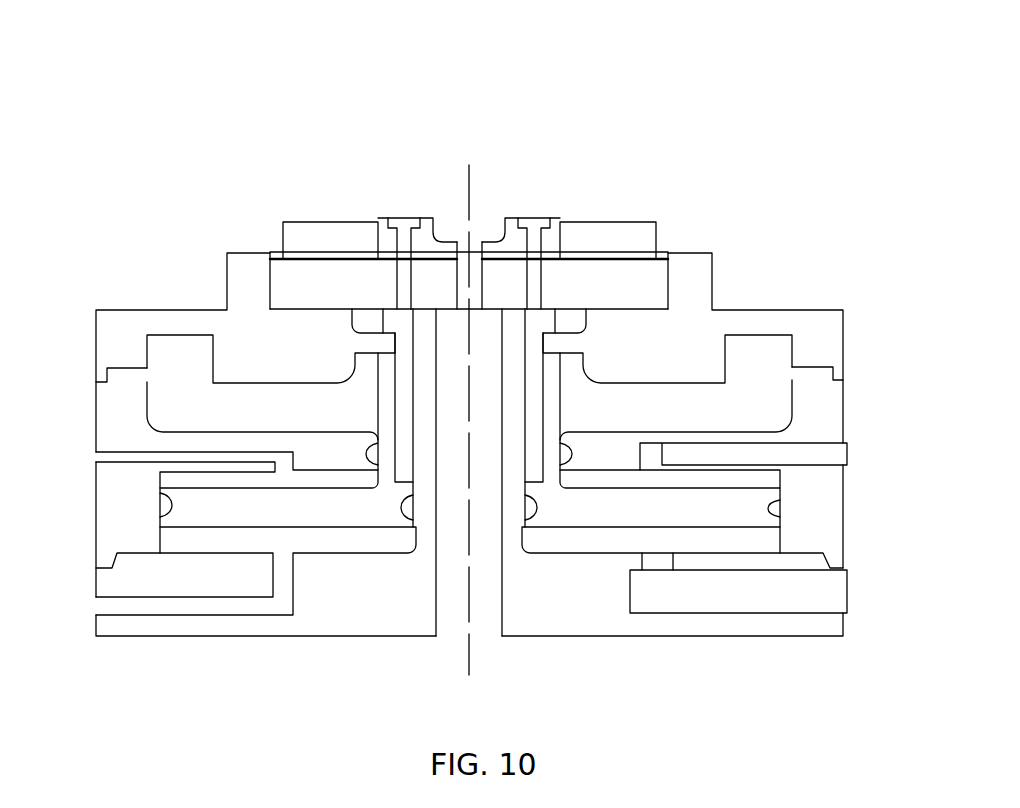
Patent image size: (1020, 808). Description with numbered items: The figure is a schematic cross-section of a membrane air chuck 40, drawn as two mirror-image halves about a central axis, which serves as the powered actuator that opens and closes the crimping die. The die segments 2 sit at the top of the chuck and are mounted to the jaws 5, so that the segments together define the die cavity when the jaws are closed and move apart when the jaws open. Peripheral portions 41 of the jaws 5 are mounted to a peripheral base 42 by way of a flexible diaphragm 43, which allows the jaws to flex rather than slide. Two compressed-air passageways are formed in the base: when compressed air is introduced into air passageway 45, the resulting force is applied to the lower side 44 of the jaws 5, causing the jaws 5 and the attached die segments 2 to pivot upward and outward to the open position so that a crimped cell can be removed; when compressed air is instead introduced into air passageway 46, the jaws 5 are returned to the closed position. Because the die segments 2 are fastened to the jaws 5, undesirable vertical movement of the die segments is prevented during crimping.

The membrane air chuck 40 is at (593, 58).
The die segments 2 is at (437, 232).
The jaws 5 is at (325, 230).
The peripheral portions 41 is at (275, 242).
The peripheral base 42 is at (137, 395).
The flexible diaphragm 43 is at (247, 347).
The lower side 44 is at (297, 327).
The air passageway 45 is at (127, 608).
The air passageway 46 is at (100, 454).